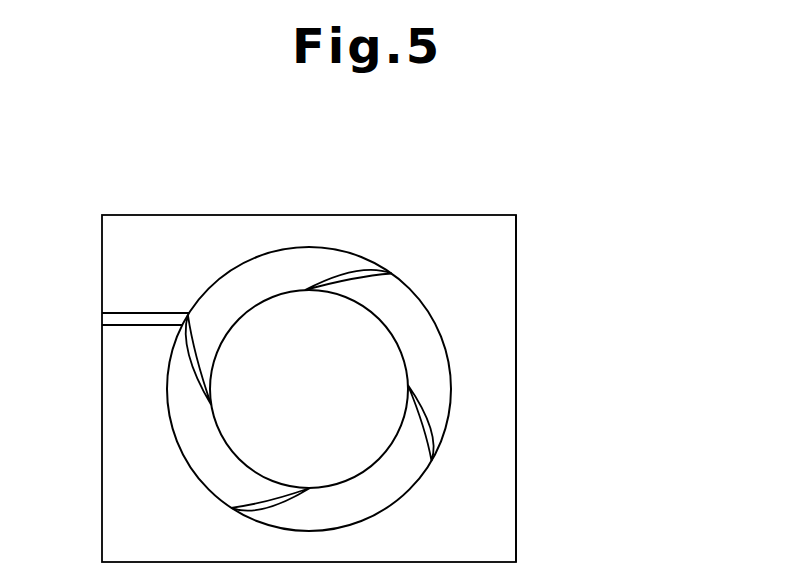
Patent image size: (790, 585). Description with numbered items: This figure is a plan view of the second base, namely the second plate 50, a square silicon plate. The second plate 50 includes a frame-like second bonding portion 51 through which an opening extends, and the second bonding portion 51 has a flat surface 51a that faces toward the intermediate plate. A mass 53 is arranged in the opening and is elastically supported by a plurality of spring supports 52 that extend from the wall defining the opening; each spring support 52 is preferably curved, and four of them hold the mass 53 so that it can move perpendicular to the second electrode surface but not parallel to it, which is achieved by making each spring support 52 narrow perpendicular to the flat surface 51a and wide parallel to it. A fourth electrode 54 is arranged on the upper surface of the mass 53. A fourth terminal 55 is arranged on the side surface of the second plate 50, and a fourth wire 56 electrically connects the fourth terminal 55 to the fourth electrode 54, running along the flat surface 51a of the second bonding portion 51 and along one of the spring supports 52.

The second plate 50 is at (516, 243).
The second bonding portion 51 is at (516, 308).
The flat surface 51a is at (511, 382).
The spring supports 52 is at (196, 348).
The mass 53 is at (388, 325).
The fourth electrode 54 is at (360, 460).
The fourth terminal 55 is at (102, 318).
The fourth wire 56 is at (150, 313).